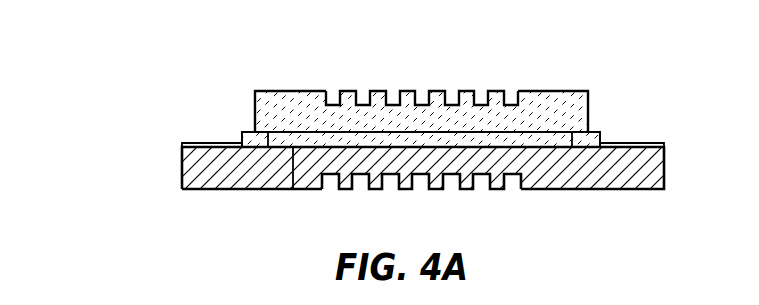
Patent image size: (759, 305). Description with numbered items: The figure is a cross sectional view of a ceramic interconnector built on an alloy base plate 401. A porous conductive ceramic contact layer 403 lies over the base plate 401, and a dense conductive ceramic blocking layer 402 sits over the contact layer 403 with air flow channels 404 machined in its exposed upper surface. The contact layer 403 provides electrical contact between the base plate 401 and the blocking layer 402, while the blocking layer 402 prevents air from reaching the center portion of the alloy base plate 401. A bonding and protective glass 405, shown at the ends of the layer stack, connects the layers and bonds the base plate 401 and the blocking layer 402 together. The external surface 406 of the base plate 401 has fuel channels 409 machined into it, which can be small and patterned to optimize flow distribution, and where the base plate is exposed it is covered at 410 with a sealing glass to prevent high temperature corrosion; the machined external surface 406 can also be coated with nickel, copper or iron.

The alloy base plate 401 is at (183, 176).
The dense conductive ceramic blocking layer 402 is at (267, 92).
The porous conductive ceramic contact layer 403 is at (296, 189).
The air flow channels 404 is at (360, 94).
The bonding and protective glass 405 is at (250, 131).
The external surface of the base plate 406 is at (217, 189).
The fuel channels 409 is at (478, 181).
The sealing glass covering exposed surface 410 is at (204, 142).